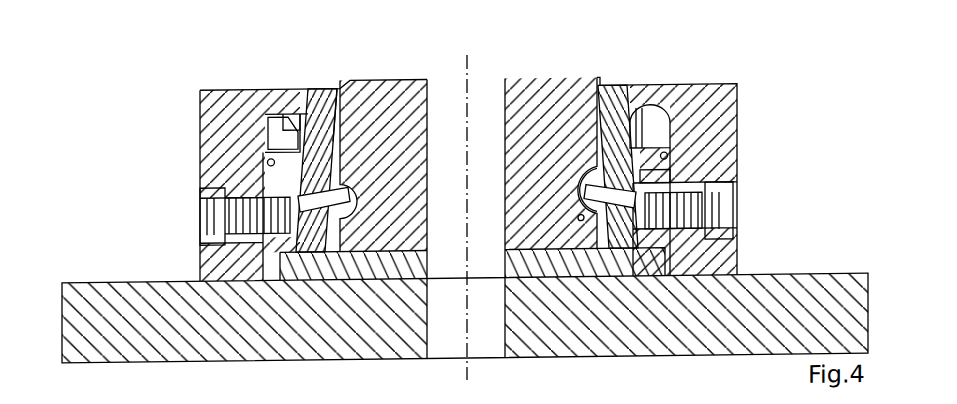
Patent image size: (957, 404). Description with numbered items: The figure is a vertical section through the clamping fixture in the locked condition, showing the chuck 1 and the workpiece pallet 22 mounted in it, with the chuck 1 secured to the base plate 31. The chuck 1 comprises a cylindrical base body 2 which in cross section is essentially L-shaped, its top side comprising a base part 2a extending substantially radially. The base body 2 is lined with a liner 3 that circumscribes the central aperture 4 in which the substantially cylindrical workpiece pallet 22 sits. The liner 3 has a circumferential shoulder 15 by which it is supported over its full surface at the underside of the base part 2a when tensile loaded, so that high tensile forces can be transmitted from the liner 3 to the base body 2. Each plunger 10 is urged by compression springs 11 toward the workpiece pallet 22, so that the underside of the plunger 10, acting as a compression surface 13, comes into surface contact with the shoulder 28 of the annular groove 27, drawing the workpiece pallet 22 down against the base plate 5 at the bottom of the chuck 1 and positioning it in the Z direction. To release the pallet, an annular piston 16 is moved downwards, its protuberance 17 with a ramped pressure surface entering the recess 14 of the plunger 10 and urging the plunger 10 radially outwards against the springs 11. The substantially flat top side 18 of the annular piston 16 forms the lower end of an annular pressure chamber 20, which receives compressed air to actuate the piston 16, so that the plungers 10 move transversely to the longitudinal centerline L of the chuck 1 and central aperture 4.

The chuck 1 is at (768, 107).
The base body 2 is at (217, 85).
The base part 2a is at (302, 84).
The liner 3 is at (324, 84).
The central aperture 4 is at (338, 82).
The base plate 5 is at (521, 263).
The plunger 10 is at (595, 198).
The compression springs 11 is at (718, 214).
The compression surface 13 is at (472, 264).
The recess 14 is at (631, 189).
The circumferential shoulder 15 is at (283, 84).
The annular piston 16 is at (285, 148).
The protuberance 17 is at (652, 180).
The top side 18 is at (642, 110).
The annular pressure chamber 20 is at (650, 143).
The workpiece pallet 22 is at (522, 82).
The annular groove 27 is at (590, 189).
The shoulder 28 is at (579, 222).
The base plate 31 is at (397, 331).